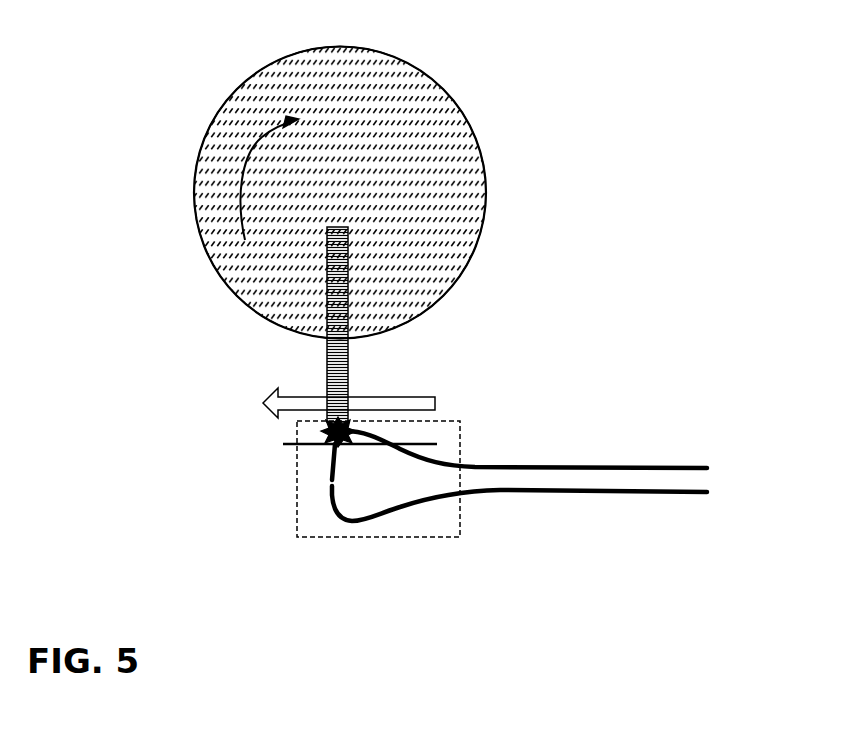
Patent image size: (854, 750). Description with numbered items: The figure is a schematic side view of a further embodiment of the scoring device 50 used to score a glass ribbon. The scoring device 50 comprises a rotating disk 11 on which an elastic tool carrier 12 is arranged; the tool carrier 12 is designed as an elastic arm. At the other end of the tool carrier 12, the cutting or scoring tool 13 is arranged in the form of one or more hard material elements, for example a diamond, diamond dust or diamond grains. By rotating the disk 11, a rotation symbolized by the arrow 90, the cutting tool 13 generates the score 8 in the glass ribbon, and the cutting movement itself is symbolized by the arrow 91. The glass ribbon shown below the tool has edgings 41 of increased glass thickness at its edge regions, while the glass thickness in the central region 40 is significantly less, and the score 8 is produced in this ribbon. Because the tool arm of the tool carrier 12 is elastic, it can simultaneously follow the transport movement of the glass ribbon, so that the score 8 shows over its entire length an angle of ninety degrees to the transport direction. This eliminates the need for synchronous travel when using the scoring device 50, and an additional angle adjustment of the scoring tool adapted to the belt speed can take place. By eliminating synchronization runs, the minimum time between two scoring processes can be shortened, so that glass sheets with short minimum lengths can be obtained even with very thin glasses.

The scoring device 50 is at (158, 100).
The rotating disk 11 is at (437, 90).
The arrow 90 is at (238, 192).
The elastic tool carrier 12 is at (323, 293).
The arrow 91 is at (440, 400).
The cutting or scoring tool 13 is at (320, 428).
The score 8 is at (373, 448).
The central region 40 is at (580, 477).
The edgings 41 is at (370, 539).